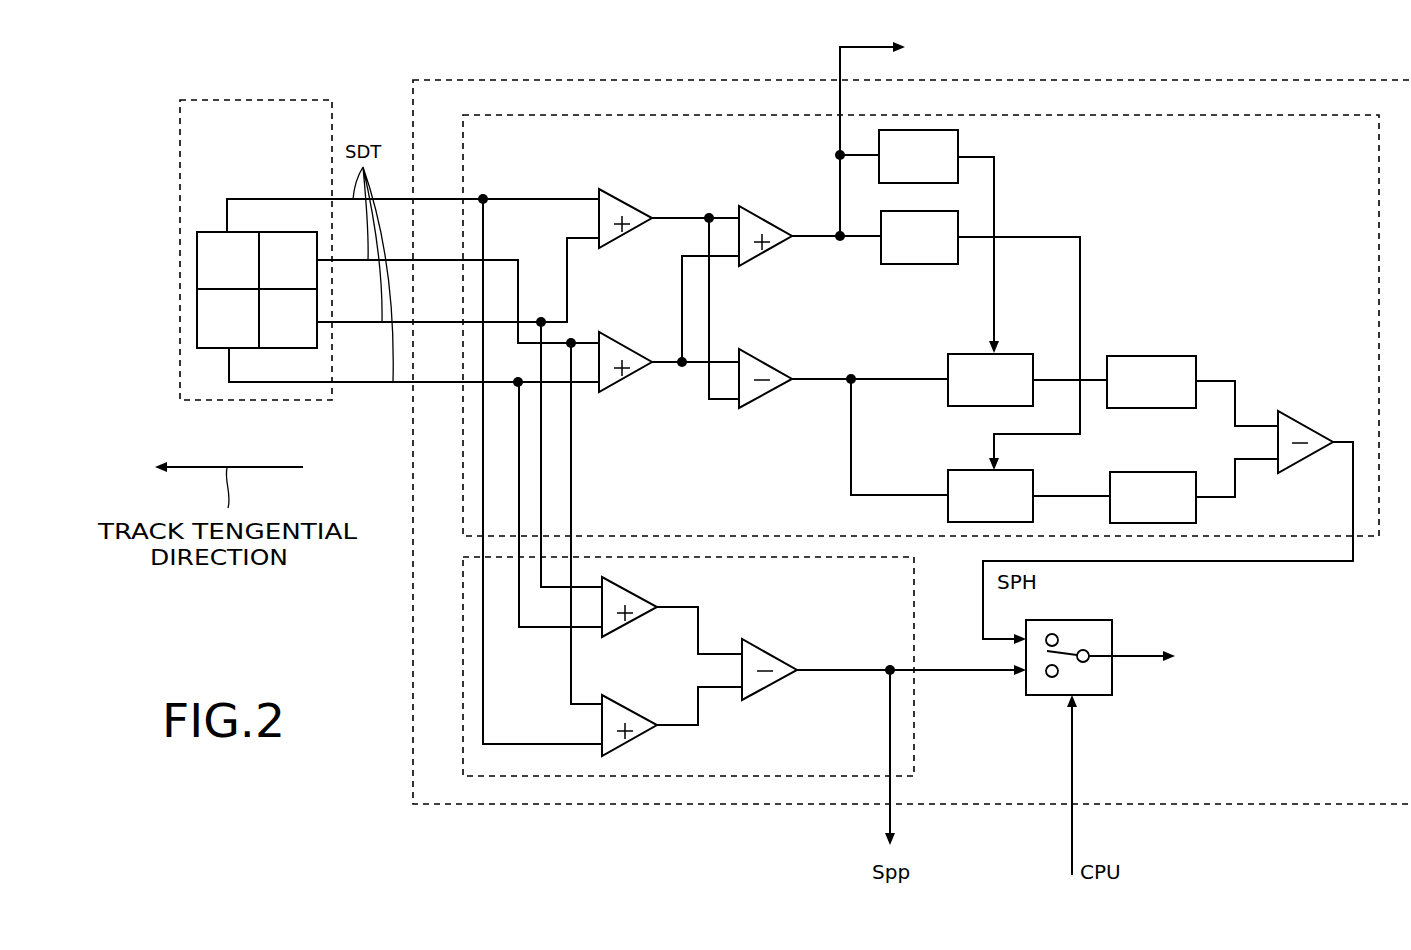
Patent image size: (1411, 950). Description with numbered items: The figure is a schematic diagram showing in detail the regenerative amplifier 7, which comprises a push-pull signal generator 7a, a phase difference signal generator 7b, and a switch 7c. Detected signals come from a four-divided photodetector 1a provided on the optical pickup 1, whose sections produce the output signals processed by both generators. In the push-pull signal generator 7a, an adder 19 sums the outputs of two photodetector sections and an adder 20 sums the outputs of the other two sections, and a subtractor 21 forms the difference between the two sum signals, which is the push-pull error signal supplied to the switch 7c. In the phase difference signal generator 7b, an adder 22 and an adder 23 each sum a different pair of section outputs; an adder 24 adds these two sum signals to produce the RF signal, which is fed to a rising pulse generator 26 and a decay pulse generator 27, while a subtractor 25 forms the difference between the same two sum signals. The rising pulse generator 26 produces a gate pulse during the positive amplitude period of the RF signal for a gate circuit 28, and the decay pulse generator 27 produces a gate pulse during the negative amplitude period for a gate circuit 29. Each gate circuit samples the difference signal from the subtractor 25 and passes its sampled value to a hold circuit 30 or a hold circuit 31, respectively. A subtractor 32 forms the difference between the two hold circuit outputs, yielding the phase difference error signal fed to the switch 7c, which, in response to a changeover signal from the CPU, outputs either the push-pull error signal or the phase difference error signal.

The optical pickup 1 is at (272, 100).
The 4-divided photodetector 1a is at (197, 248).
The regenerative amplifier 7 is at (648, 806).
The push-pull signal generator 7a is at (525, 778).
The phase difference signal generator 7b is at (1080, 115).
The switch 7c is at (1112, 638).
The adder 19 is at (625, 626).
The adder 20 is at (625, 705).
The subtractor 21 is at (760, 646).
The adder 22 is at (626, 199).
The adder 23 is at (625, 346).
The adder 24 is at (757, 208).
The subtractor 25 is at (763, 355).
The rising pulse generator 26 is at (960, 143).
The decay pulse generator 27 is at (908, 266).
The gate circuit 28 is at (1018, 354).
The gate circuit 29 is at (962, 470).
The hold circuit 30 is at (1167, 356).
The hold circuit 31 is at (1125, 472).
The subtractor 32 is at (1298, 420).